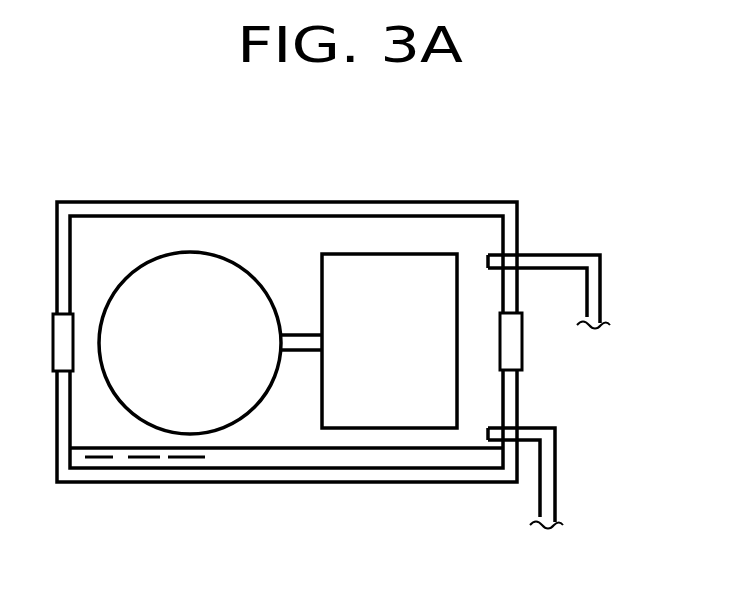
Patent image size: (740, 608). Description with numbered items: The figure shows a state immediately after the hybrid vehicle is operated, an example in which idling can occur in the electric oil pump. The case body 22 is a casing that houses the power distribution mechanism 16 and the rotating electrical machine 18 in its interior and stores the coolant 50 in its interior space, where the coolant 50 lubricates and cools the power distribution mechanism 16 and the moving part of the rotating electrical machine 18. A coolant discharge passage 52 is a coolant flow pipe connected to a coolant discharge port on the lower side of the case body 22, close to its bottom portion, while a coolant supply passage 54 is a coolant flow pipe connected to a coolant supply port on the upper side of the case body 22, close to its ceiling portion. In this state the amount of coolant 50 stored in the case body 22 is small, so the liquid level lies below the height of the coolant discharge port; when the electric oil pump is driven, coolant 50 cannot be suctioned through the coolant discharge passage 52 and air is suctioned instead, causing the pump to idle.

The power distribution mechanism 16 is at (390, 254).
The rotating electrical machine 18 is at (190, 252).
The case body 22 is at (380, 482).
The coolant 50 is at (220, 459).
The coolant discharge passage 52 is at (555, 475).
The coolant supply passage 54 is at (567, 255).